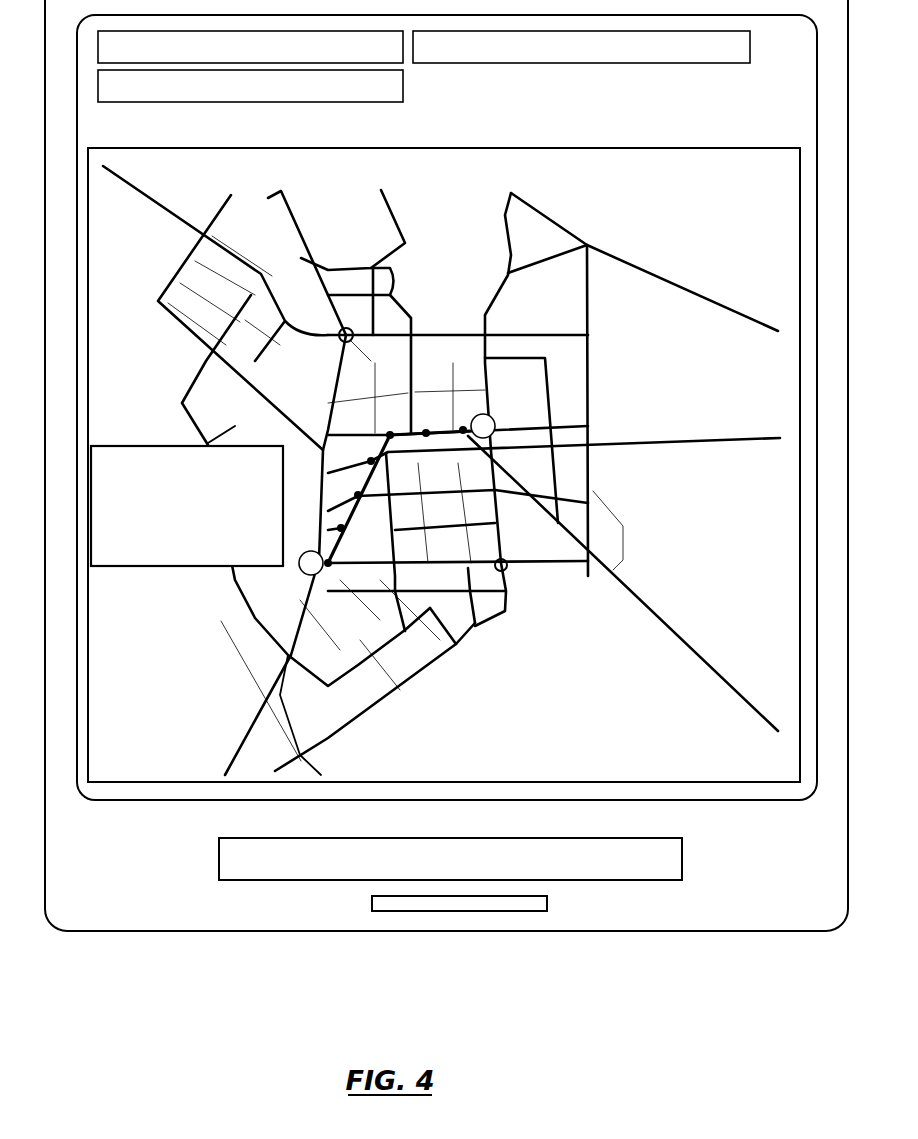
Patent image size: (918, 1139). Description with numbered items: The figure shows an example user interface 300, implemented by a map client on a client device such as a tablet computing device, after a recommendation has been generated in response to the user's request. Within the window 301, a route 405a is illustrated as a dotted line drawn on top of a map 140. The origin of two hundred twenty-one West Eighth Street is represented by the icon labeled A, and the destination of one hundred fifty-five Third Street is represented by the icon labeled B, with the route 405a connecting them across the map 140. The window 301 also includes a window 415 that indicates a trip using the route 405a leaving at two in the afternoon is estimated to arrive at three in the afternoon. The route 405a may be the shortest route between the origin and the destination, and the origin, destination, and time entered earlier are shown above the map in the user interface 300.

The user interface 300 is at (373, 1002).
The window 301 is at (138, 769).
The map 140 is at (441, 470).
The route 405a is at (368, 473).
The window 415 is at (280, 562).